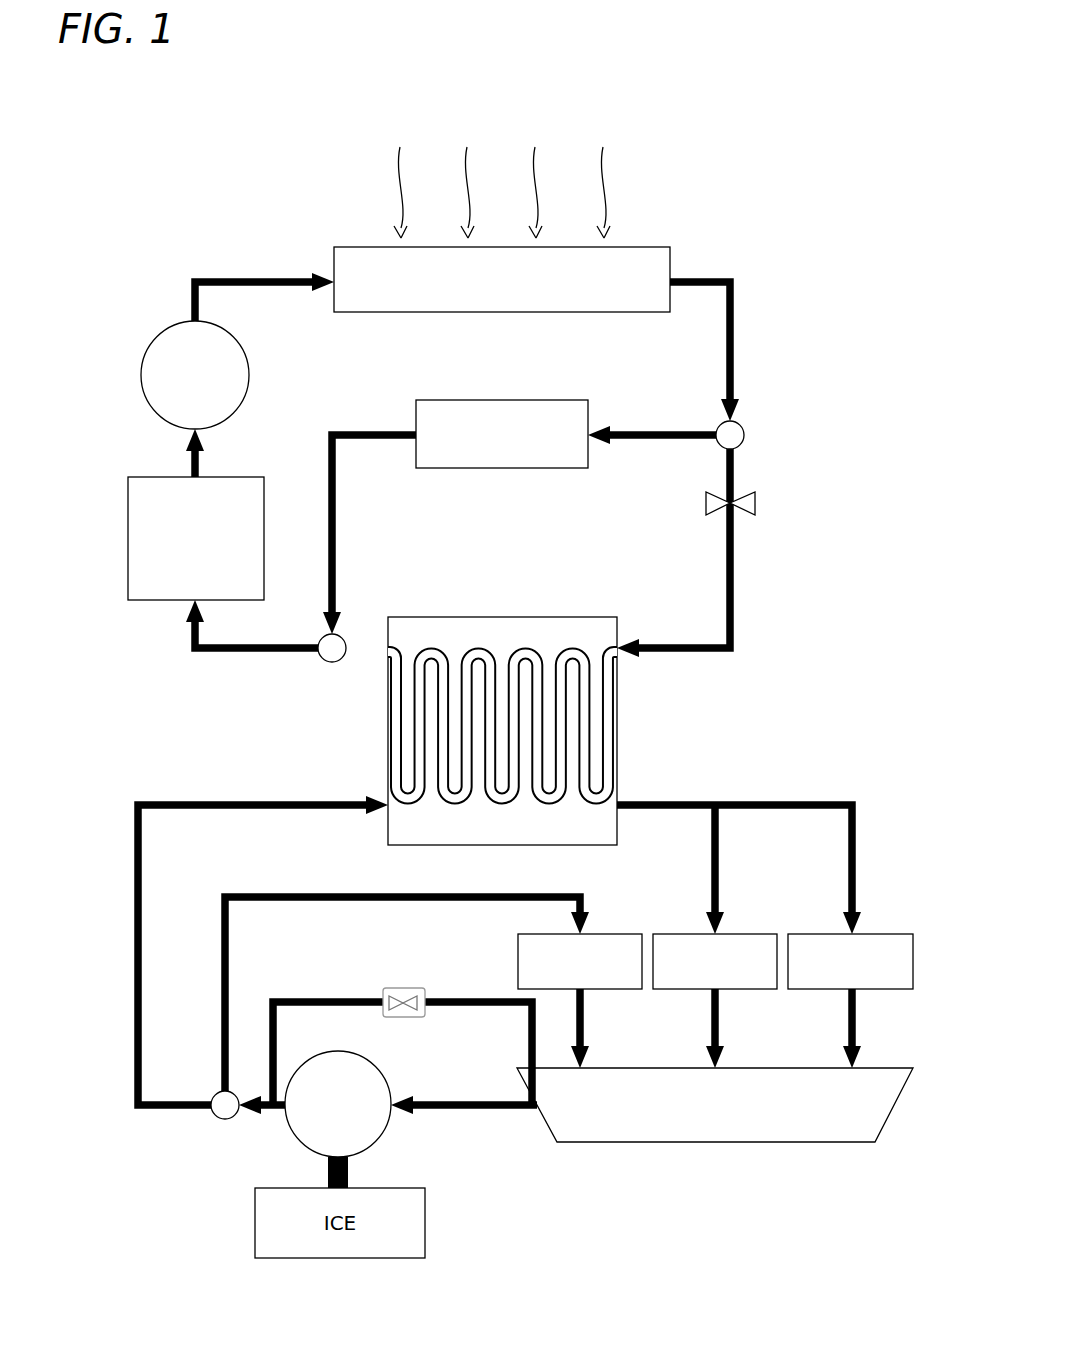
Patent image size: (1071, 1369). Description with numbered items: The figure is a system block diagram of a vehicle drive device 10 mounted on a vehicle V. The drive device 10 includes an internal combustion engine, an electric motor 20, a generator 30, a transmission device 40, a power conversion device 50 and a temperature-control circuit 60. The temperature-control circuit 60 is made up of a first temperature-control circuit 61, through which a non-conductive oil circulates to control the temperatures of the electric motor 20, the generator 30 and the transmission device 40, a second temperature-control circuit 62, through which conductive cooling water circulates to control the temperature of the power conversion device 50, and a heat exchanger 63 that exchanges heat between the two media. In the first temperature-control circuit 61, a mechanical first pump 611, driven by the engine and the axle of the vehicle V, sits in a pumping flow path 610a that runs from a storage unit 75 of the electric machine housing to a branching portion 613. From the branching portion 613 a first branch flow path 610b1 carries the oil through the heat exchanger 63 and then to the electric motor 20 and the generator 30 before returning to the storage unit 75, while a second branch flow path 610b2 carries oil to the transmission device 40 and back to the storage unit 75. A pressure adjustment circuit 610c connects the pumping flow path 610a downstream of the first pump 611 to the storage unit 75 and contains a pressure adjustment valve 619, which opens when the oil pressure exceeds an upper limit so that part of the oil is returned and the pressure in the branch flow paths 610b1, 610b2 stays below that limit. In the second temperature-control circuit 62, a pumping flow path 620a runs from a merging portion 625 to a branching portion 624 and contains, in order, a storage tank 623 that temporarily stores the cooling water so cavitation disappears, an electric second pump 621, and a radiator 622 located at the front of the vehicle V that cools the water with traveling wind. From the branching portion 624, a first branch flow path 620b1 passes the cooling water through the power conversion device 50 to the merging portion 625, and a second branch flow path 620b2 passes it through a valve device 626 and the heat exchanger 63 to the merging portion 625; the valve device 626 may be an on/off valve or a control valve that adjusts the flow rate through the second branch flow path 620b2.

The vehicle drive device 10 is at (276, 167).
The vehicle V is at (847, 152).
The temperature-control circuit 60 is at (754, 272).
The pumping flow path 620a is at (222, 276).
The second pump 621 is at (152, 330).
The radiator 622 is at (384, 314).
The storage tank 623 is at (253, 475).
The branching portion 624 is at (745, 435).
The merging portion 625 is at (330, 663).
The valve device 626 is at (757, 503).
The first branch flow path 620b1 is at (653, 430).
The second branch flow path 620b2 is at (668, 645).
The second temperature-control circuit 62 is at (757, 577).
The power conversion device 50 is at (501, 470).
The heat exchanger 63 is at (618, 722).
The first temperature-control circuit 61 is at (782, 750).
The first branch flow path 610b1 is at (163, 800).
The second branch flow path 610b2 is at (228, 975).
The pressure adjustment circuit 610c is at (455, 1000).
The pumping flow path 610a is at (462, 1100).
The pressure adjustment valve 619 is at (390, 990).
The first pump 611 is at (340, 1051).
The branching portion 613 is at (223, 1120).
The transmission device 40 is at (624, 932).
The generator 30 is at (761, 932).
The electric motor 20 is at (896, 932).
The storage unit 75 is at (715, 1143).